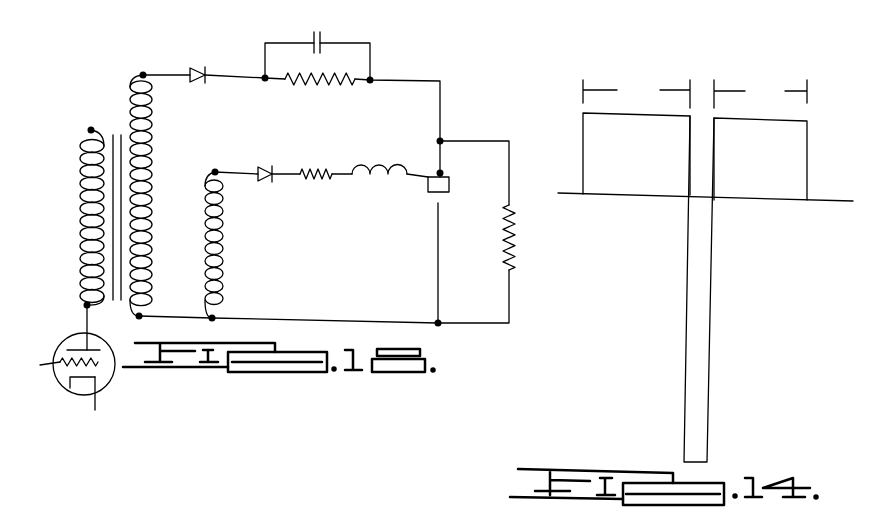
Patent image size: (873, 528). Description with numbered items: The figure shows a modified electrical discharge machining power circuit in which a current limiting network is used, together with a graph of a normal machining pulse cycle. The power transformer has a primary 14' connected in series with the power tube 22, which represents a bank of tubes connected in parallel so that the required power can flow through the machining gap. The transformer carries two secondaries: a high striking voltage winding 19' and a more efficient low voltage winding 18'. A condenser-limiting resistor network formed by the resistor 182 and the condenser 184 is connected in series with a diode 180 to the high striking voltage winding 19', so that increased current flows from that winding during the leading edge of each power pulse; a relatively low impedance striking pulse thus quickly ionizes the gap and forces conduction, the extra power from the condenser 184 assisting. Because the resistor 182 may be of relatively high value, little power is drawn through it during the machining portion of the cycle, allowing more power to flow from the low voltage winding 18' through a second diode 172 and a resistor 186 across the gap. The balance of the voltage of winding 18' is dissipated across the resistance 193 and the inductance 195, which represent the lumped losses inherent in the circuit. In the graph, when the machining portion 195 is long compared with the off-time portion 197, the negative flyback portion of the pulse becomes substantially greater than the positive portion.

In FIG. 12, the primary 14' is at (65, 217).
In FIG. 12, the high striking voltage winding 19' is at (177, 195).
In FIG. 12, the low voltage winding 18' is at (255, 245).
In FIG. 12, the power tube 22 is at (110, 382).
In FIG. 12, the diode 180 is at (198, 66).
In FIG. 12, the resistor 182 is at (333, 89).
In FIG. 12, the condenser 184 is at (323, 33).
In FIG. 12, the diode 172 is at (278, 134).
In FIG. 12, the resistance 193 is at (309, 168).
In FIG. 14, the resistance 193 is at (686, 282).
In FIG. 12, the inductance 195 is at (377, 168).
In FIG. 14, the inductance 195 is at (695, 91).
In FIG. 12, the load resistor 186 is at (513, 238).
In FIG. 14, the off-time portion 197 is at (697, 90).